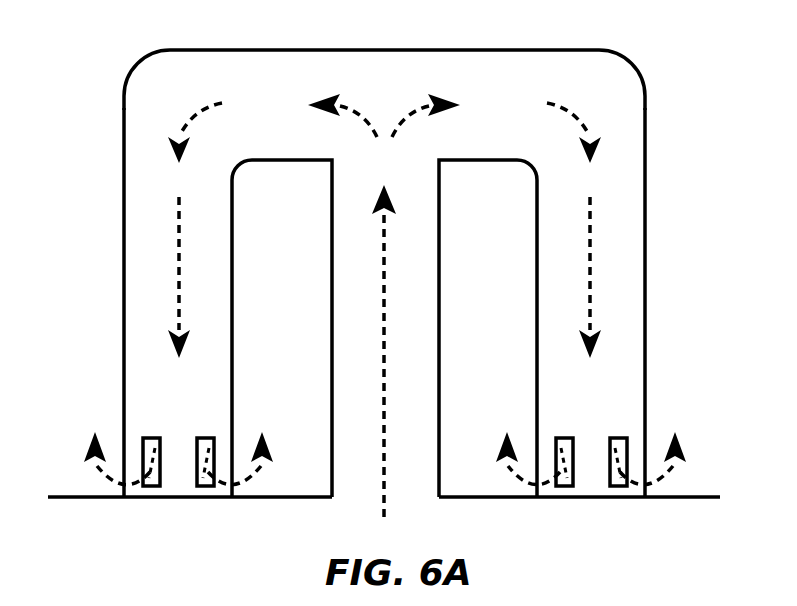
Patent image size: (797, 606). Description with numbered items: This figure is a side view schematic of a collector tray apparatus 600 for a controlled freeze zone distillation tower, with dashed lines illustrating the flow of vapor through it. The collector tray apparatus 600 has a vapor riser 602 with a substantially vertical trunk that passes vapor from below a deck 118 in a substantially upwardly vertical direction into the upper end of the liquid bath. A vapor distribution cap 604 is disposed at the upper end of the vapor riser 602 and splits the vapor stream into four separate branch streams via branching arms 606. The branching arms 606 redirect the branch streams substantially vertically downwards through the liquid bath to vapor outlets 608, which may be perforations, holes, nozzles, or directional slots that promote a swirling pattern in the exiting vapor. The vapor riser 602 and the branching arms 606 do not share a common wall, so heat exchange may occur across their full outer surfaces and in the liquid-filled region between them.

The collector tray apparatus 600 is at (106, 36).
The vapor distribution cap 604 is at (575, 50).
The branching arms 606 is at (124, 258).
The vapor riser 602 is at (468, 292).
The vapor outlets 608 is at (202, 438).
The deck 118 is at (697, 497).